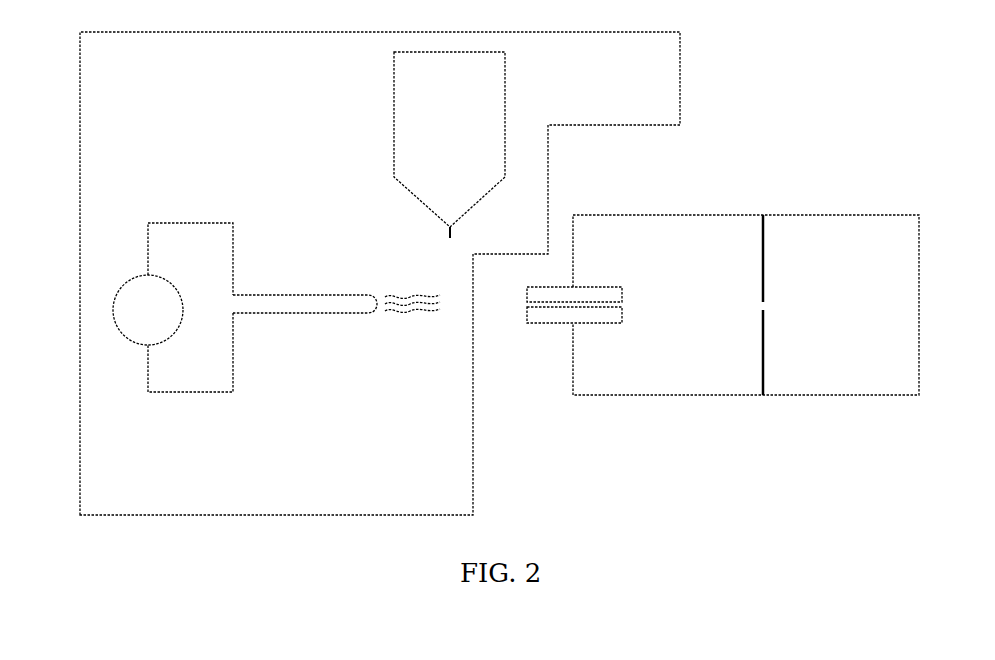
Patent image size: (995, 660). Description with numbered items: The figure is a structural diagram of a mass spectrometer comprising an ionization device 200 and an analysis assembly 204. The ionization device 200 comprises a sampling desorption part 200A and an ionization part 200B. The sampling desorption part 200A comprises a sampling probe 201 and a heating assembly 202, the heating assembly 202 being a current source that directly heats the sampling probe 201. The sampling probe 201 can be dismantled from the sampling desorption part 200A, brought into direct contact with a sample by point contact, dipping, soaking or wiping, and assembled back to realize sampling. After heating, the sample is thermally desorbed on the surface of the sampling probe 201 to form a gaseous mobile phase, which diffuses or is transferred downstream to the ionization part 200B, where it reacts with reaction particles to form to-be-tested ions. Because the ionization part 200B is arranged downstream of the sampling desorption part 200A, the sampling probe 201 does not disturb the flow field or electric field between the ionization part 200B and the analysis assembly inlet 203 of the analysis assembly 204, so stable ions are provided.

The ionization device 200 is at (502, 467).
The sampling desorption part 200A is at (276, 302).
The ionization part 200B is at (494, 108).
The sampling probe 201 is at (372, 306).
The heating assembly 202 is at (184, 222).
The analysis assembly inlet 203 is at (527, 323).
The analysis assembly 204 is at (820, 198).